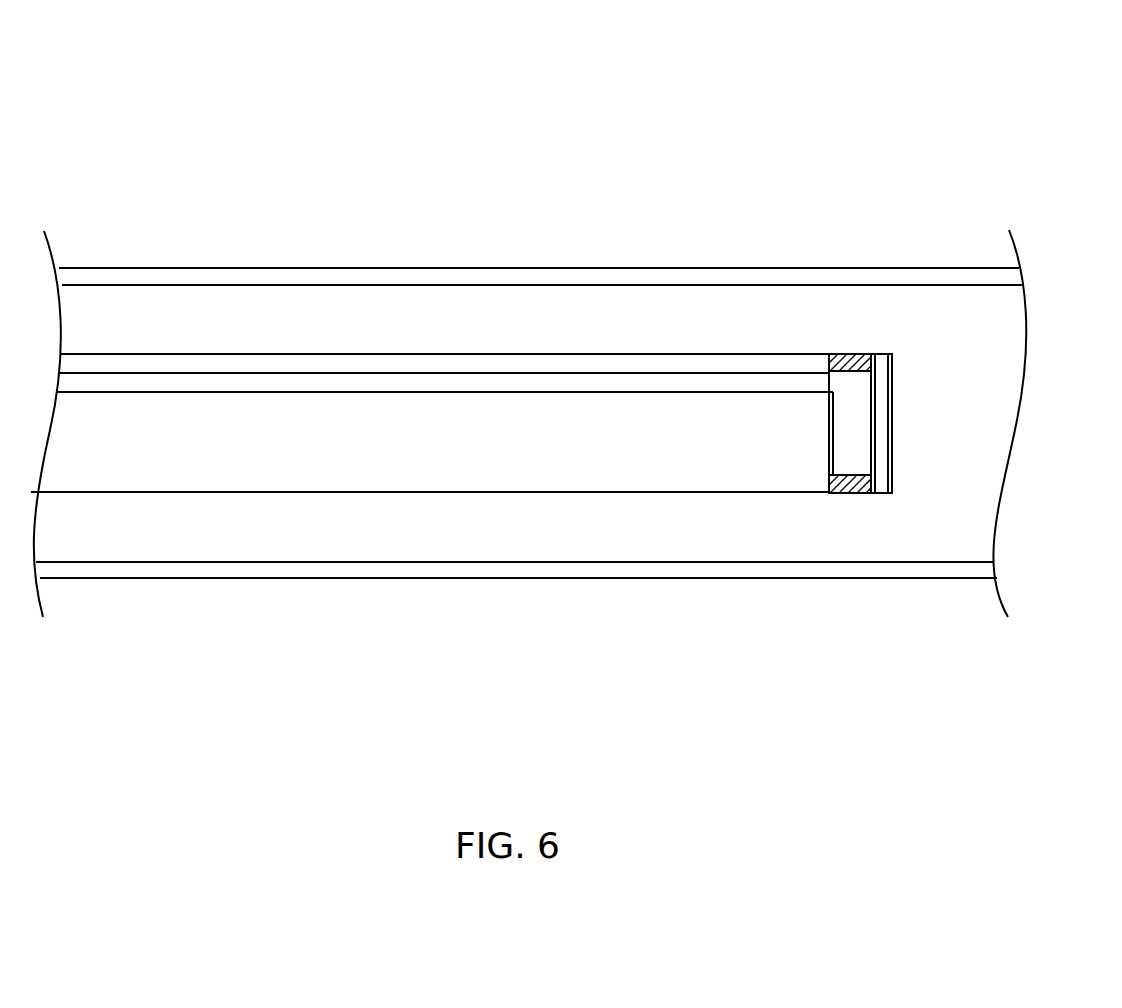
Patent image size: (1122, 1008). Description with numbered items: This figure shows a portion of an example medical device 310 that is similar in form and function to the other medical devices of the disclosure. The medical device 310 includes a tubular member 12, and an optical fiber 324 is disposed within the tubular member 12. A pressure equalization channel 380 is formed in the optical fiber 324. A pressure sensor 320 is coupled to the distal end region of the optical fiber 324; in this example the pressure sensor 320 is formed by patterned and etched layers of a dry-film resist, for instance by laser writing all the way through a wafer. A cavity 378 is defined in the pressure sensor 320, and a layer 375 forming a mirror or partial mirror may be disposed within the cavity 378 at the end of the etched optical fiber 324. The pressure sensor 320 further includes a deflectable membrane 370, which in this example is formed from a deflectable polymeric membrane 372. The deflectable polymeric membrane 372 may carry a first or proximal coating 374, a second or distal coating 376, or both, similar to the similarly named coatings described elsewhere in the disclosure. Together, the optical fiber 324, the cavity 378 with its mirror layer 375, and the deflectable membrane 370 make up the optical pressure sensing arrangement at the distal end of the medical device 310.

The medical device 310 is at (143, 120).
The tubular member 12 is at (538, 267).
The pressure equalization channel 380 is at (674, 383).
The optical fiber 324 is at (229, 462).
The deflectable membrane 370 is at (913, 382).
The cavity 378 is at (852, 393).
The pressure sensor 320 is at (845, 512).
The layer forming a mirror or partial mirror 375 is at (828, 435).
The first or proximal coating 374 is at (875, 446).
The deflectable polymeric membrane 372 is at (881, 488).
The second or distal coating 376 is at (892, 455).